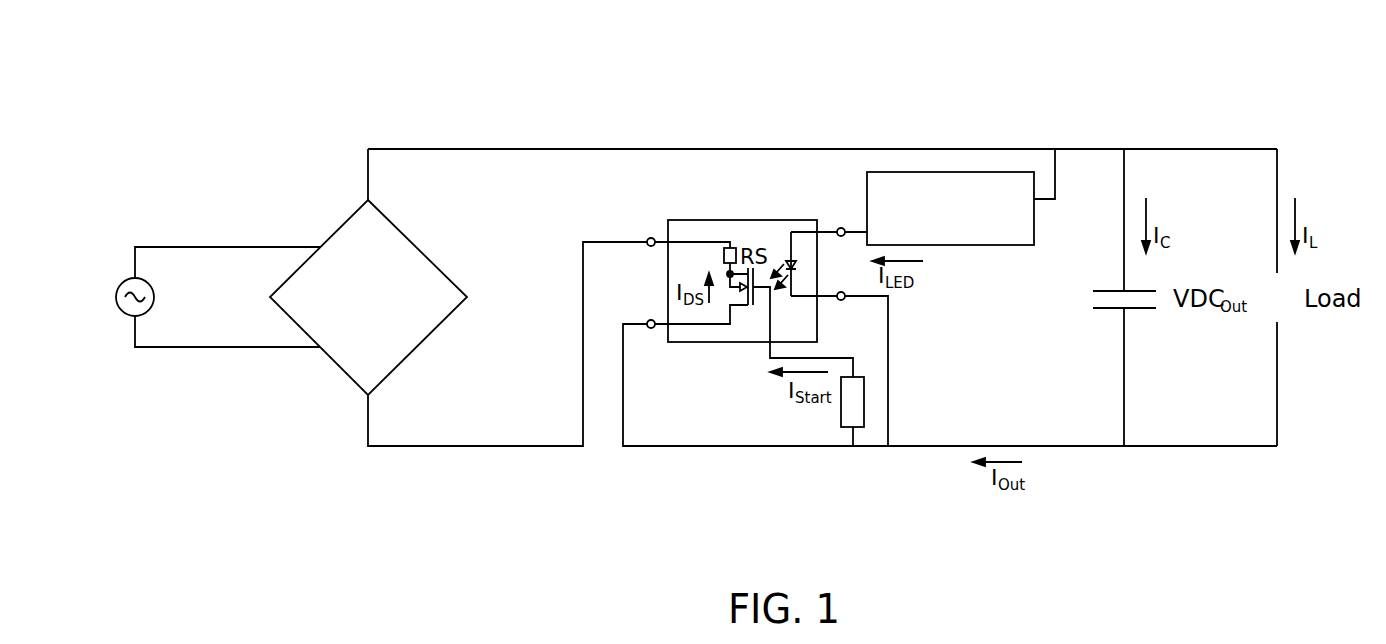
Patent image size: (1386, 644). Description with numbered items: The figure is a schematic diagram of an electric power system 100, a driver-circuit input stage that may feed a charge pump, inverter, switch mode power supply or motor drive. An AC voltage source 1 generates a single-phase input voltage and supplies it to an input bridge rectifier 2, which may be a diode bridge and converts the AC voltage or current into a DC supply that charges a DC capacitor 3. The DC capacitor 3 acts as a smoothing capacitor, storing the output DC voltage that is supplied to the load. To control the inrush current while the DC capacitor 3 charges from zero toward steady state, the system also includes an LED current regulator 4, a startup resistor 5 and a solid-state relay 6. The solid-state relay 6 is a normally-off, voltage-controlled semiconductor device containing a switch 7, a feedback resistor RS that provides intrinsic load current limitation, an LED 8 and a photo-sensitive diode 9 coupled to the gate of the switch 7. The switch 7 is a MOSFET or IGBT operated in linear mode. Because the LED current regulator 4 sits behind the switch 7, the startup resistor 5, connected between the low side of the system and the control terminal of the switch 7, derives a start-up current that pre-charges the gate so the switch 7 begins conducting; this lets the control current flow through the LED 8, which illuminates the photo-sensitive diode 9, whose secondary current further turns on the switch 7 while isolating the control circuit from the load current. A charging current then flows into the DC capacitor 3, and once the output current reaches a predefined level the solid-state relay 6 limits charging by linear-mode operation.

The electric power system 100 is at (1201, 78).
The AC voltage source 1 is at (115, 297).
The input bridge rectifier 2 is at (329, 238).
The DC capacitor 3 is at (1146, 310).
The LED current regulator 4 is at (1034, 229).
The startup resistor 5 is at (864, 404).
The solid-state relay 6 is at (675, 220).
The switch 7 is at (728, 275).
The LED 8 is at (796, 266).
The photo-sensitive diode 9 is at (765, 273).